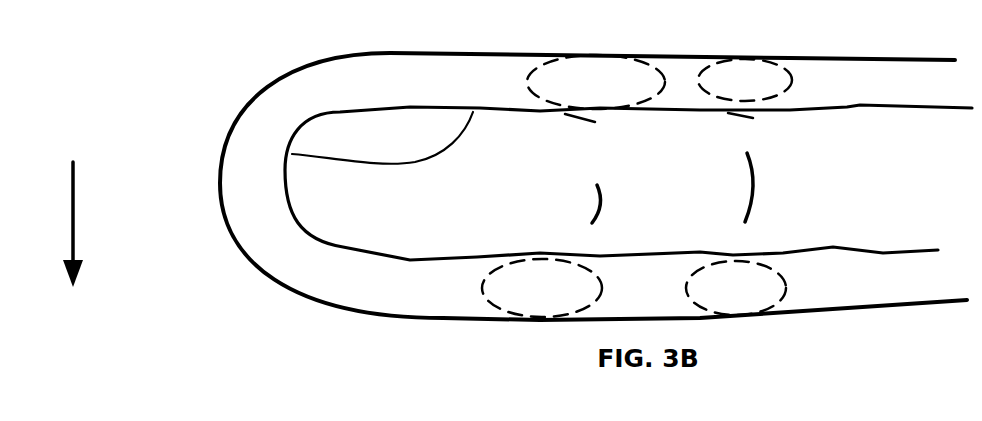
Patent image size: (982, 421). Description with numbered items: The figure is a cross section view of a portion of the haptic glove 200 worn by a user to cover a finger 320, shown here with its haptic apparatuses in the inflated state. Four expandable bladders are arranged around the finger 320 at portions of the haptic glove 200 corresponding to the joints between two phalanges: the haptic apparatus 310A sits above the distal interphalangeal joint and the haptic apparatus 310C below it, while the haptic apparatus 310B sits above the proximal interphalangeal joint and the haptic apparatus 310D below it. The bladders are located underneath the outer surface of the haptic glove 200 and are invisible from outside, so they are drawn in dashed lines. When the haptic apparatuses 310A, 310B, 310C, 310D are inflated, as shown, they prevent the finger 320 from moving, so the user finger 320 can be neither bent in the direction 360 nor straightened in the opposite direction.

The haptic glove 200 is at (167, 138).
The finger 320 is at (628, 182).
The haptic apparatus 310A is at (537, 75).
The haptic apparatus 310B is at (703, 73).
The haptic apparatus 310C is at (515, 302).
The haptic apparatus 310D is at (785, 303).
The direction 360 is at (93, 224).